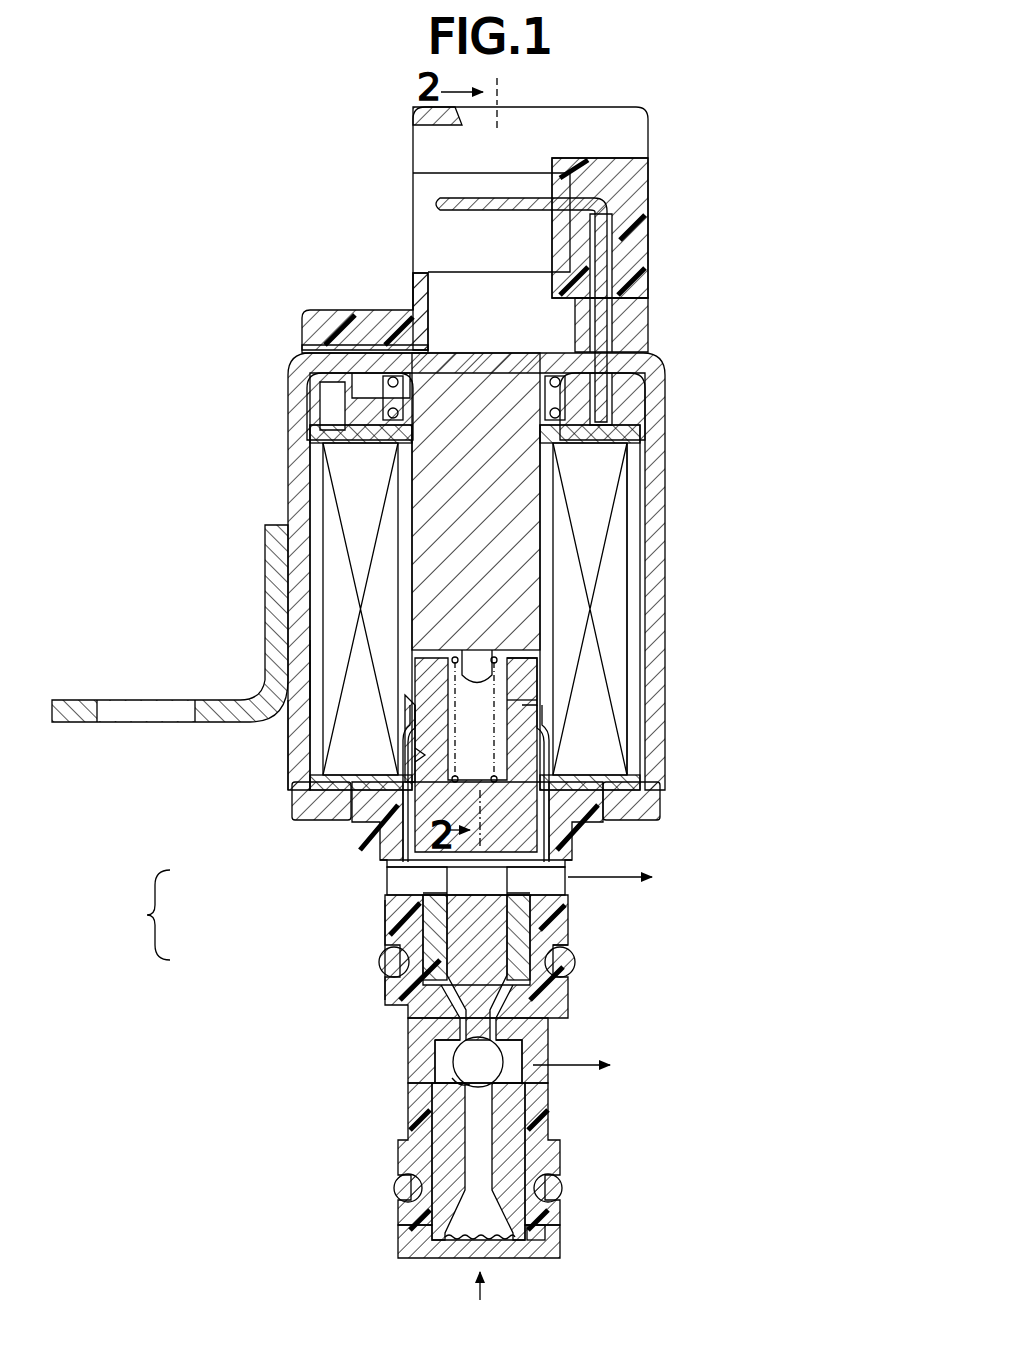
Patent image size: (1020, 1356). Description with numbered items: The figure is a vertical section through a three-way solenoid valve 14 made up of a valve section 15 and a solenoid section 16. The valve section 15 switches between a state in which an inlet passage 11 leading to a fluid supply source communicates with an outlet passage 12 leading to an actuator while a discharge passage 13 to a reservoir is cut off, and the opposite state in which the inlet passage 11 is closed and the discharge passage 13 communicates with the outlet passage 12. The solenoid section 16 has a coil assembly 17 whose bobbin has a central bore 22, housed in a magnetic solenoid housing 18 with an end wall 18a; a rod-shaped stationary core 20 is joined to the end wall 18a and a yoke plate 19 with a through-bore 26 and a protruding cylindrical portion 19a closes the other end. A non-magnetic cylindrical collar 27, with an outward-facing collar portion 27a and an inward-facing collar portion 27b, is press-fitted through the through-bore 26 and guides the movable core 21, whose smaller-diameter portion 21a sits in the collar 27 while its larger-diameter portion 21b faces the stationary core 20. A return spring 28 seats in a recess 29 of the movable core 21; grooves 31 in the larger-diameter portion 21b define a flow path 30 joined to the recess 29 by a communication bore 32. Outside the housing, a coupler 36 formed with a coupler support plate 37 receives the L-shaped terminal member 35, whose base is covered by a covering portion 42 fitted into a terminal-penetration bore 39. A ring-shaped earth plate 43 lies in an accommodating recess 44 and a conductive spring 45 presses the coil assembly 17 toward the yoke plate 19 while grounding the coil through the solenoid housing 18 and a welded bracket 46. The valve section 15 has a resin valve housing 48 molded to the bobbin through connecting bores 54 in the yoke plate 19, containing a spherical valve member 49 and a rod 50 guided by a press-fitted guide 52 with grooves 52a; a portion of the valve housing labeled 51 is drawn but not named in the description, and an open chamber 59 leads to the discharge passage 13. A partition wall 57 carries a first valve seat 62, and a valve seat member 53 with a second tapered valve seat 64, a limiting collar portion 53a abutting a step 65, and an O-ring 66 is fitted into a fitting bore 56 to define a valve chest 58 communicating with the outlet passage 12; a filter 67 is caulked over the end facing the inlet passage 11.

The inlet passage 11 is at (482, 1285).
The outlet passage 12 is at (572, 1068).
The discharge passage 13 is at (640, 880).
The three-way solenoid valve 14 is at (144, 915).
The valve section 15 is at (372, 930).
The solenoid section 16 is at (276, 820).
The coil assembly 17 is at (300, 485).
The solenoid housing 18 is at (660, 500).
The end wall 18a is at (358, 350).
The yoke plate 19 is at (660, 812).
The cylindrical portion 19a is at (572, 862).
The stationary core 20 is at (530, 558).
The movable core 21 is at (433, 650).
The smaller-diameter portion 21a is at (422, 755).
The larger-diameter portion 21b is at (522, 656).
The central bore 22 is at (543, 462).
The through-bore 26 is at (565, 780).
The cylindrical collar 27 is at (412, 795).
The outward-facing collar portion 27a is at (522, 704).
The inward-facing collar portion 27b is at (425, 870).
The return spring 28 is at (465, 648).
The recess 29 is at (412, 700).
The flow path 30 is at (508, 665).
The grooves 31 is at (330, 675).
The communication bore 32 is at (632, 702).
The terminal member 35 is at (510, 205).
The coupler 36 is at (636, 217).
The coupler support plate 37 is at (303, 332).
The terminal-penetration bore 39 is at (635, 332).
The covering portion 42 is at (618, 297).
The earth plate 43 is at (428, 318).
The accommodating recess 44 is at (355, 370).
The spring 45 is at (642, 422).
The bracket 46 is at (84, 700).
The valve housing 48 is at (570, 990).
The spherical valve member 49 is at (488, 1056).
The rod 50 is at (420, 930).
The valve body lower portion 51 is at (415, 1020).
The guide 52 is at (430, 962).
The grooves 52a is at (547, 938).
The valve seat member 53 is at (535, 1126).
The limiting collar portion 53a is at (530, 1232).
The connecting bores 54 is at (640, 775).
The fitting bore 56 is at (420, 1130).
The partition wall 57 is at (493, 985).
The valve chest 58 is at (520, 1060).
The open chamber 59 is at (535, 896).
The first valve seat 62 is at (438, 1056).
The second tapered valve seat 64 is at (458, 1072).
The step 65 is at (415, 1236).
The O-ring 66 is at (556, 1152).
The filter 67 is at (462, 1248).